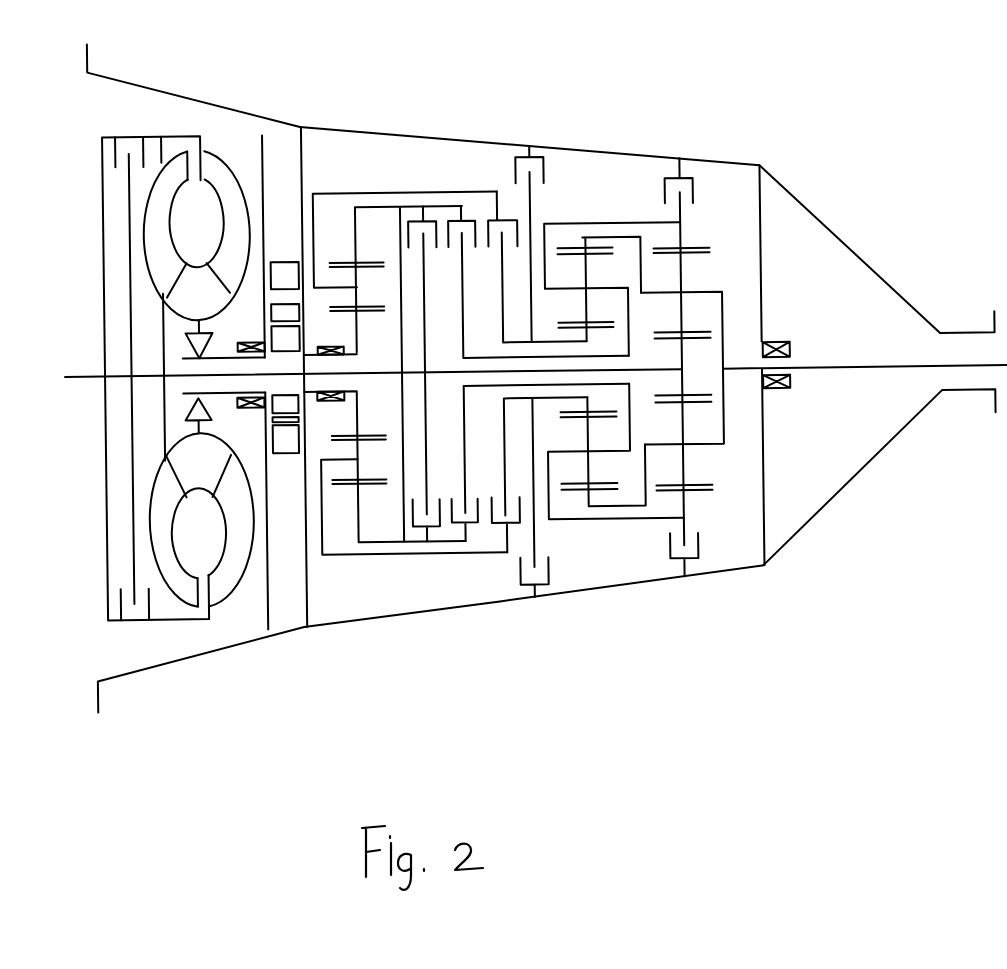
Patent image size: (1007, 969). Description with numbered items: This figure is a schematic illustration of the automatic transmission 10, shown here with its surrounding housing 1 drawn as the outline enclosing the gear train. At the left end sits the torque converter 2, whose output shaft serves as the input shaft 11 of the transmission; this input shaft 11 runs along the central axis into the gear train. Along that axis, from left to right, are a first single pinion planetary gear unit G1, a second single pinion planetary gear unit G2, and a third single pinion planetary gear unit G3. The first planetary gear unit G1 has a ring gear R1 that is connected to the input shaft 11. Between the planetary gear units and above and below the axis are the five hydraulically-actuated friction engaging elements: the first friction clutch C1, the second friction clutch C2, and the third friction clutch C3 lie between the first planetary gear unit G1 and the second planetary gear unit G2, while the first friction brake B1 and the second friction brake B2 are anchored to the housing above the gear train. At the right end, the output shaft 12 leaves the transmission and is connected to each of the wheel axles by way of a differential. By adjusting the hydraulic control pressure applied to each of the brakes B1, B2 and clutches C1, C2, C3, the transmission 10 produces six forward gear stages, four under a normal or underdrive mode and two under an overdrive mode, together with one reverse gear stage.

The automatic transmission 1 is at (814, 218).
The torque converter 2 is at (211, 143).
The automatic transmission 10 is at (670, 597).
The input shaft 11 is at (177, 368).
The output shaft 12 is at (907, 368).
The first single pinion planetary gear unit G1 is at (334, 165).
The second single pinion planetary gear unit G2 is at (570, 216).
The third single pinion planetary gear unit G3 is at (701, 504).
The ring gear R1 is at (341, 256).
The first friction clutch C1 is at (415, 220).
The second friction clutch C2 is at (470, 221).
The third friction clutch C3 is at (514, 218).
The first friction brake B1 is at (536, 153).
The second friction brake B2 is at (697, 180).